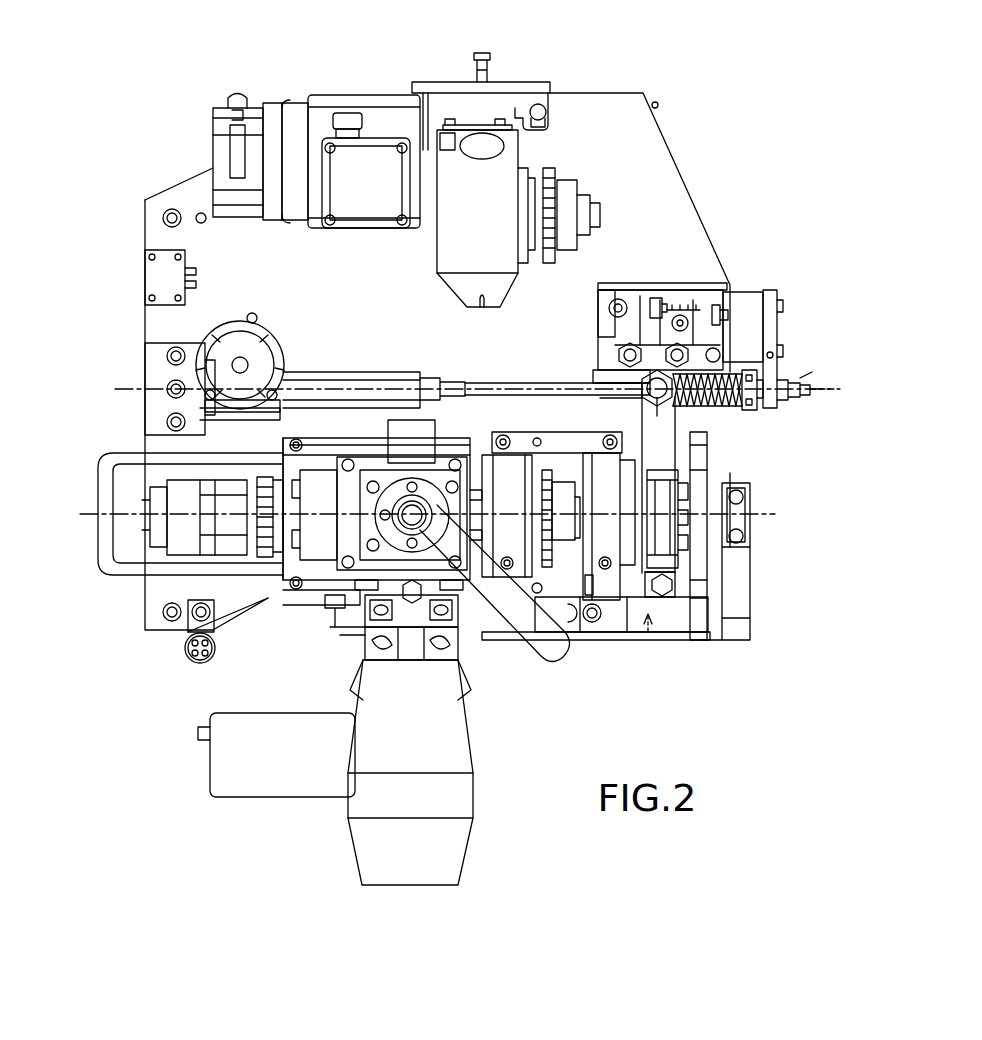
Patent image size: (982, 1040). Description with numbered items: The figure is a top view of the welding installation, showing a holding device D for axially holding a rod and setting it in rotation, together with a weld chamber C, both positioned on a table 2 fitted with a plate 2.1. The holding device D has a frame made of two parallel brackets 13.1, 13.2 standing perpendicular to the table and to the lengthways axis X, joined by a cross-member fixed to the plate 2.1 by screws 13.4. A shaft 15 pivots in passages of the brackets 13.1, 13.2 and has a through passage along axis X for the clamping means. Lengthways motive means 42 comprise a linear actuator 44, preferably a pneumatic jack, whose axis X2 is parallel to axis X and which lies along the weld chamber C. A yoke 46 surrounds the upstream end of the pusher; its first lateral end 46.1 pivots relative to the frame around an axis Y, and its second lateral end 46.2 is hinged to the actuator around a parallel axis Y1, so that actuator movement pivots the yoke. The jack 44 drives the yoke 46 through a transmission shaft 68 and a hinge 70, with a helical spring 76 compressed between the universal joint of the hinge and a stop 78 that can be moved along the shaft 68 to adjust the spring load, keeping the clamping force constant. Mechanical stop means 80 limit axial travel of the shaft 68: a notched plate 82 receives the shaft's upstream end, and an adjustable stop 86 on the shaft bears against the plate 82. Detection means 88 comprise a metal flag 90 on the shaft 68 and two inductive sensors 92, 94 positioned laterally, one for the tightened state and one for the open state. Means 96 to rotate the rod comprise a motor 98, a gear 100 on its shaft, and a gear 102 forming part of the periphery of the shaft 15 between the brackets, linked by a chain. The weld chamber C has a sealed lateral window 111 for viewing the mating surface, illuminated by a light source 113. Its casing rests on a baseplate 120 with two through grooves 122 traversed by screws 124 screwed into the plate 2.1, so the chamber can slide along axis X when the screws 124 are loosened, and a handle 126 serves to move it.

The table 2 is at (125, 336).
The plate 2.1 is at (157, 440).
The bracket 13.1 is at (615, 540).
The bracket 13.2 is at (515, 540).
The screws 13.4 is at (495, 450).
The shaft 15 is at (570, 560).
The lengthways motive means 42 is at (330, 308).
The linear actuator 44 is at (352, 378).
The yoke 46 is at (665, 460).
The first lateral end 46.1 is at (670, 596).
The second lateral end 46.2 is at (648, 410).
The transmission shaft 68 is at (520, 410).
The hinge 70 is at (636, 385).
The helical spring 76 is at (705, 395).
The stop 78 is at (756, 412).
The mechanical stop means 80 is at (812, 388).
The plate 82 is at (770, 300).
The stop 86 is at (785, 396).
The detection means 88 is at (681, 254).
The flag 90 is at (600, 380).
The inductive sensor 92 is at (630, 300).
The inductive sensor 94 is at (680, 300).
The means to rotate the rod 96 is at (520, 72).
The motor 98 is at (385, 118).
The gear 100 is at (548, 170).
The gear 102 is at (565, 545).
The sealed lateral window 111 is at (440, 450).
The light source 113 is at (458, 830).
The baseplate 120 is at (300, 563).
The through grooves 122 is at (358, 450).
The screws 124 is at (300, 440).
The handle 126 is at (97, 545).
The weld chamber C is at (137, 600).
The holding device D is at (648, 634).
The lengthways axis X is at (774, 518).
The axis of linear actuator X2 is at (800, 378).
The pivot axis Y is at (670, 585).
The pivot axis Y1 is at (657, 402).